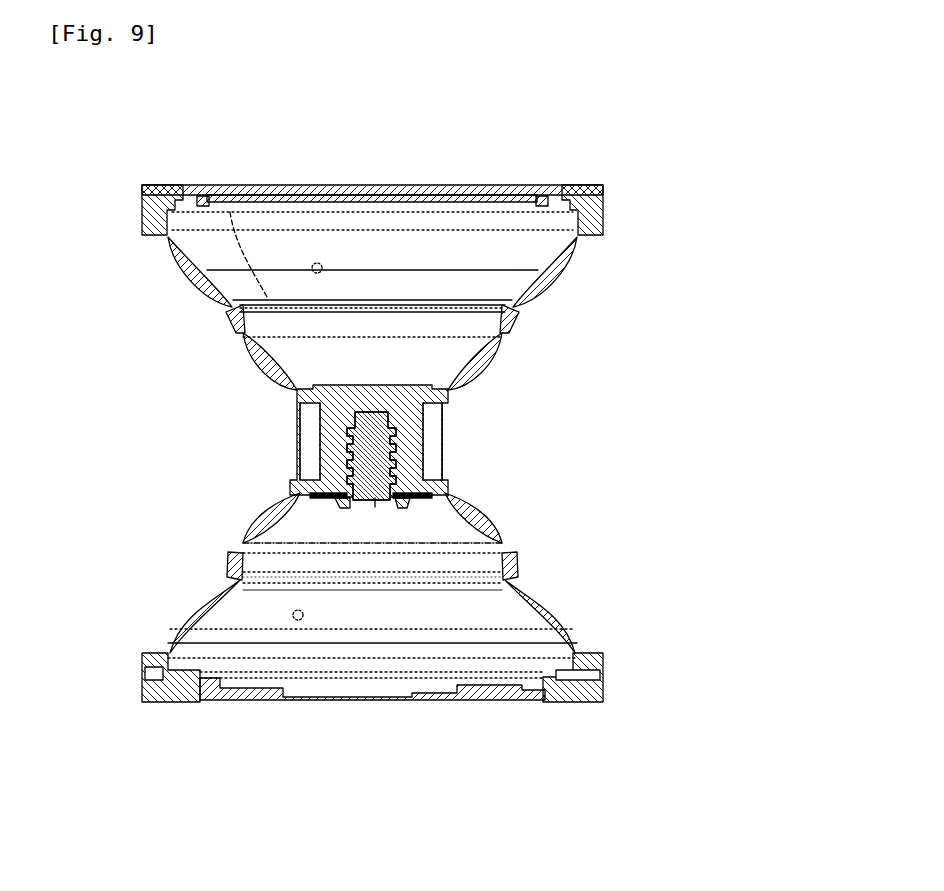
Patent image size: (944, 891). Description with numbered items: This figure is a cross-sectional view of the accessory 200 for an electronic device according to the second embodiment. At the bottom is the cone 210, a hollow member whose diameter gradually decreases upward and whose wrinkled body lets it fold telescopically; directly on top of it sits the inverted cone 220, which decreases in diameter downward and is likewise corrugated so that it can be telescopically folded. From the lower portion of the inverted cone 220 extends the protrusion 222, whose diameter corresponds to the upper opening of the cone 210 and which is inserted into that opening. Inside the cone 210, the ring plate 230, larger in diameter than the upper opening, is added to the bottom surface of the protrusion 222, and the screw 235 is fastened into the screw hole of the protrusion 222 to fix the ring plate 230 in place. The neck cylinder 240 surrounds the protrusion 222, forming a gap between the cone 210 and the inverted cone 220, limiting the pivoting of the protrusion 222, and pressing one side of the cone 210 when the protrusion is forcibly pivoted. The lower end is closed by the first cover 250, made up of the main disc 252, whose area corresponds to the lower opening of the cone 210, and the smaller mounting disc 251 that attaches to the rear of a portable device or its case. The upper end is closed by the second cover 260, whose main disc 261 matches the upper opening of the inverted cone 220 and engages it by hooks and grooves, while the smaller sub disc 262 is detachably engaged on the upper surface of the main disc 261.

The accessory for an electronic device 200 is at (158, 149).
The cone 210 is at (540, 604).
The inverted cone 220 is at (545, 282).
The protrusion 222 is at (445, 435).
The ring plate 230 is at (433, 512).
The screw 235 is at (367, 422).
The neck cylinder 240 is at (308, 457).
The first cover 250 is at (588, 815).
The mounting disc 251 is at (498, 702).
The main disc 252 is at (580, 702).
The second cover 260 is at (596, 84).
The main disc 261 is at (598, 186).
The sub disc 262 is at (505, 186).